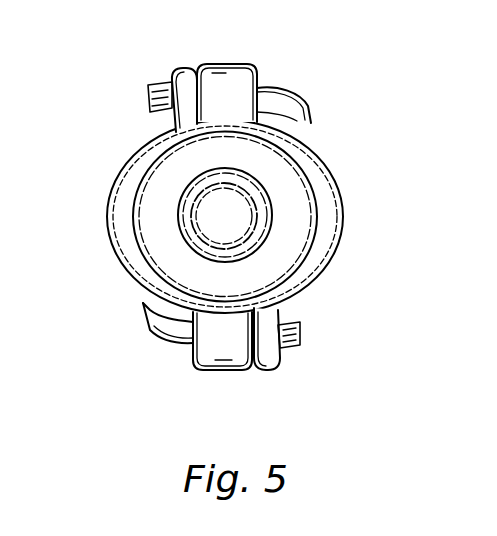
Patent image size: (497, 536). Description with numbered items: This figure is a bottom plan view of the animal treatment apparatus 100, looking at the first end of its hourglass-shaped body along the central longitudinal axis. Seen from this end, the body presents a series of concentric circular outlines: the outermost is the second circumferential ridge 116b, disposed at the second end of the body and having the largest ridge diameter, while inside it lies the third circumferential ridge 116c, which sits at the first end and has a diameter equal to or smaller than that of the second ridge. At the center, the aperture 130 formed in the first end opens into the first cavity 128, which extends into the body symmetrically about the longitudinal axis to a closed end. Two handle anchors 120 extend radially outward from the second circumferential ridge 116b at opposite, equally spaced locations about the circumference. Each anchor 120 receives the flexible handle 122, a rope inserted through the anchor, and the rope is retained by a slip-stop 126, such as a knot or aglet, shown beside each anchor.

The animal treatment apparatus 100 is at (229, 217).
The second circumferential ridge 116b is at (120, 207).
The third circumferential ridge 116c is at (162, 259).
The handle anchor 120 is at (218, 84).
The flexible handle 122 is at (270, 102).
The slip-stop 126 is at (188, 74).
The first cavity 128 is at (241, 211).
The aperture 130 is at (270, 226).